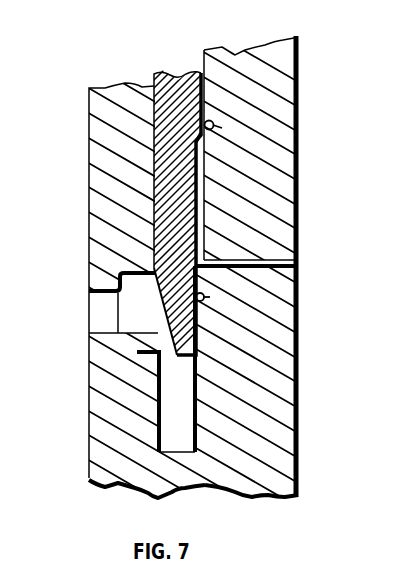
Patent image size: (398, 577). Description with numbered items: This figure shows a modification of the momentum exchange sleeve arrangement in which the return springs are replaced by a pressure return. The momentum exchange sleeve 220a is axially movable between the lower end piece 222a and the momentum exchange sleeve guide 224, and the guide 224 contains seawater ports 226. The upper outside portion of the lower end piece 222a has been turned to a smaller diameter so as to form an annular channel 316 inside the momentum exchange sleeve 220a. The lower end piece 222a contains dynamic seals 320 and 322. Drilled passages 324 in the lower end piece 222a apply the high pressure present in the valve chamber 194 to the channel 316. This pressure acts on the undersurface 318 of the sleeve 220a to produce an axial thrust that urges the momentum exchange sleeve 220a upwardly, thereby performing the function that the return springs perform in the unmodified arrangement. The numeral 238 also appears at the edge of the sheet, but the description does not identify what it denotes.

The valve chamber 194 is at (382, 238).
The momentum exchange sleeve 220a is at (176, 86).
The lower end piece 222a is at (252, 59).
The momentum exchange sleeve guide 224 is at (118, 153).
The seawater ports 226 is at (108, 307).
The annular channel 316 is at (202, 203).
The undersurface 318 is at (222, 128).
The dynamic seal 320 is at (208, 137).
The dynamic seal 322 is at (210, 297).
The drilled passages 324 is at (262, 272).
The piston 238 is at (397, 575).